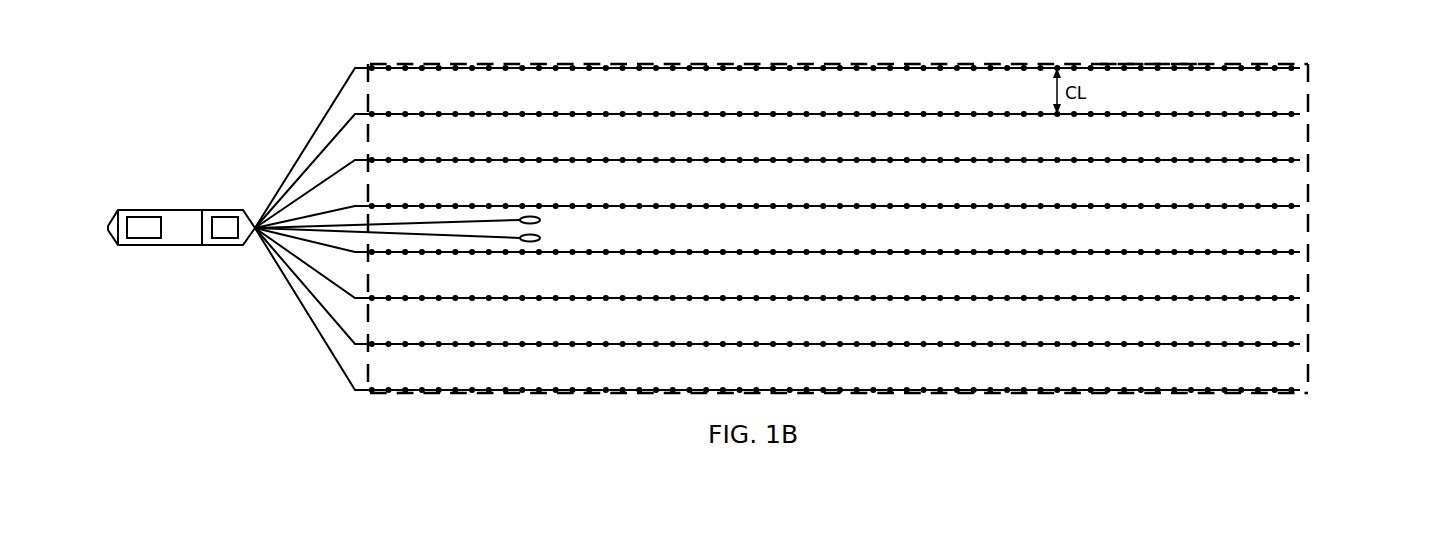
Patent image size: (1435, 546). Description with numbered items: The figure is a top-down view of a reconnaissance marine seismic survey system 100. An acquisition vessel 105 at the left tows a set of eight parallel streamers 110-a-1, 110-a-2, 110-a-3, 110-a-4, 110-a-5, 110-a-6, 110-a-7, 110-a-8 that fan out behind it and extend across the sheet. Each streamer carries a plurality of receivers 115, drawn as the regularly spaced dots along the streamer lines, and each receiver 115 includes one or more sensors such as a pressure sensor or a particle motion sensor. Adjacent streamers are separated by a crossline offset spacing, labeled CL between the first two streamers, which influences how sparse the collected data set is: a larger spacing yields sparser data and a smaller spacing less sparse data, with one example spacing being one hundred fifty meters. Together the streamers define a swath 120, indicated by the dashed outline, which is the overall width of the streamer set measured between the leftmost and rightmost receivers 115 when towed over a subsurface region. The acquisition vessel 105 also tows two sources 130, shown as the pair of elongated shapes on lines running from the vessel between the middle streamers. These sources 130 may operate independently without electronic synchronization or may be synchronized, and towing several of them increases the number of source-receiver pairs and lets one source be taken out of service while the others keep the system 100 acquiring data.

The system 100 is at (953, 42).
The acquisition vessel 105 is at (157, 210).
The streamer 110-a-1 is at (1283, 68).
The streamer 110-a-2 is at (1283, 114).
The streamer 110-a-3 is at (1283, 160).
The streamer 110-a-4 is at (1283, 206).
The streamer 110-a-5 is at (1283, 252).
The streamer 110-a-6 is at (1283, 298).
The streamer 110-a-7 is at (1283, 344).
The streamer 110-a-8 is at (1283, 390).
The receiver 115 is at (421, 64).
The swath 120 is at (1155, 65).
The source 130 is at (540, 220).